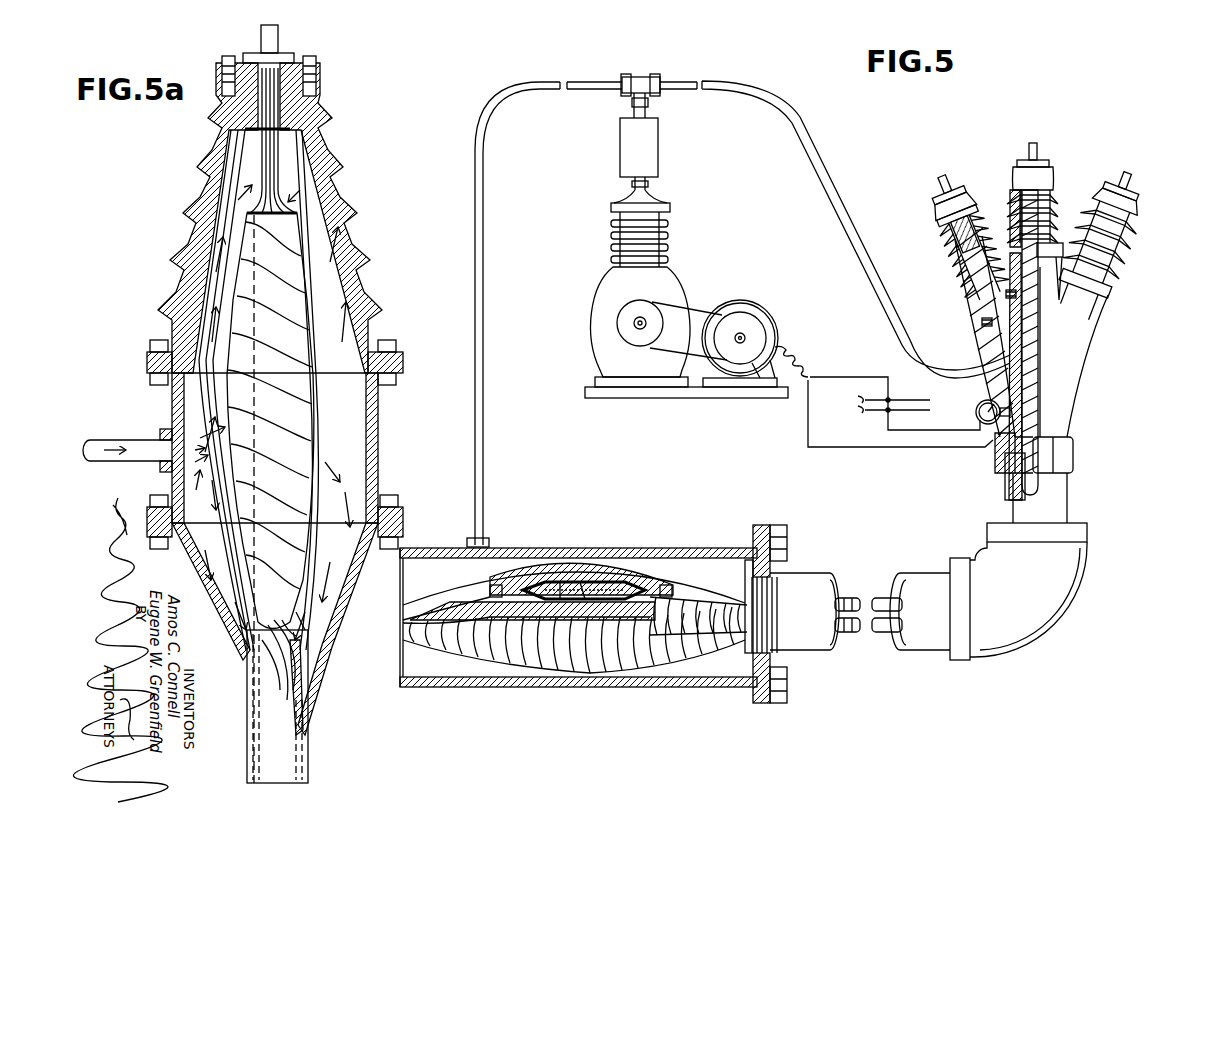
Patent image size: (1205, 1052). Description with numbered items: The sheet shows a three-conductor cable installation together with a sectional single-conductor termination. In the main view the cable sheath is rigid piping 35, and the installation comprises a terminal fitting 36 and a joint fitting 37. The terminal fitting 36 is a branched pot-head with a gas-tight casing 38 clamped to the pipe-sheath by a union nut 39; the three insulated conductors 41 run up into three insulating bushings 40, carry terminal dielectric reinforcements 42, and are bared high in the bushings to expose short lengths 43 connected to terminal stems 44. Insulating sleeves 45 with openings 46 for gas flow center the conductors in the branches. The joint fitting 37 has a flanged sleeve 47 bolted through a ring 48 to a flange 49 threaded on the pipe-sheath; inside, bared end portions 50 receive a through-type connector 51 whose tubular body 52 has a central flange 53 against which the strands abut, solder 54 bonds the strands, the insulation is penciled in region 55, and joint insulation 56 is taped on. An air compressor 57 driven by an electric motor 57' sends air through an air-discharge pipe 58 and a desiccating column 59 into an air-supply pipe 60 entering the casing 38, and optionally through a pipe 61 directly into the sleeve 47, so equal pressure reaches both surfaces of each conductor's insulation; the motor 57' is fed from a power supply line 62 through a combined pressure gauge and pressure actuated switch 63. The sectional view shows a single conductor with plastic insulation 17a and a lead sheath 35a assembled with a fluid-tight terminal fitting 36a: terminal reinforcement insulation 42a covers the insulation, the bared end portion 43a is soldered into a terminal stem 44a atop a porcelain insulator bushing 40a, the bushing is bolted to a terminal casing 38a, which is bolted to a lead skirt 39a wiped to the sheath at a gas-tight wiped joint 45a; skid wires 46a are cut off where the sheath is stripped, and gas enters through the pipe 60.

In FIG. 5A, the terminal stem 44a is at (280, 35).
In FIG. 5A, the bared end portion of the stranded conductor 43a is at (275, 140).
In FIG. 5A, the porcelain insulator bushing 40a is at (350, 210).
In FIG. 5A, the terminal reinforcement insulation 42a is at (310, 272).
In FIG. 5A, the terminal casing 38a is at (378, 413).
In FIG. 5A, the air-supply pipe 60 is at (148, 440).
In FIG. 5, the air-supply pipe 60 is at (796, 150).
In FIG. 5A, the plastic insulation 17a is at (250, 620).
In FIG. 5A, the lead sheath 35a is at (268, 790).
In FIG. 5A, the lead skirt 39a is at (296, 678).
In FIG. 5A, the wiped joint 45a is at (305, 712).
In FIG. 5A, the skid wires 46a is at (305, 640).
In FIG. 5A, the terminal fitting 36a is at (322, 736).
In FIG. 5, the pipe 61 is at (473, 165).
In FIG. 5, the desiccating column 59 is at (658, 147).
In FIG. 5, the air-discharge pipe 58 is at (630, 190).
In FIG. 5, the air compressor 57 is at (668, 300).
In FIG. 5, the electric motor 57' is at (755, 334).
In FIG. 5, the power supply line 62 is at (900, 412).
In FIG. 5, the combined pressure gauge and pressure actuated switch 63 is at (974, 410).
In FIG. 5, the gas-tight casing 38 is at (1000, 380).
In FIG. 5, the insulating sleeves 45 is at (1042, 330).
In FIG. 5, the terminal dielectric reinforcements 42 is at (985, 338).
In FIG. 5, the terminal fitting 36 is at (1102, 384).
In FIG. 5, the union nut 39 is at (1075, 452).
In FIG. 5, the rigid piping 35 is at (910, 660).
In FIG. 5, the insulated conductors 41 is at (866, 582).
In FIG. 5, the ring 48 is at (787, 548).
In FIG. 5, the flange 49 is at (750, 570).
In FIG. 5, the joint fitting 37 is at (520, 690).
In FIG. 5, the flanged sleeve 47 is at (615, 680).
In FIG. 5, the joint insulation 56 is at (565, 668).
In FIG. 5, the bared end portions of the conductors 50 is at (530, 578).
In FIG. 5, the penciled region 55 is at (496, 582).
In FIG. 5, the tubular body 52 is at (590, 620).
In FIG. 5, the solder 54 is at (612, 580).
In FIG. 5, the central flange 53 is at (590, 580).
In FIG. 5, the through-type connector 51 is at (566, 580).
In FIG. 5, the insulating bushings 40 is at (968, 230).
In FIG. 5, the terminal stems 44 is at (934, 182).
In FIG. 5, the bared lengths of the stranded conductor 43 is at (943, 245).
In FIG. 5, the openings 46 is at (980, 328).